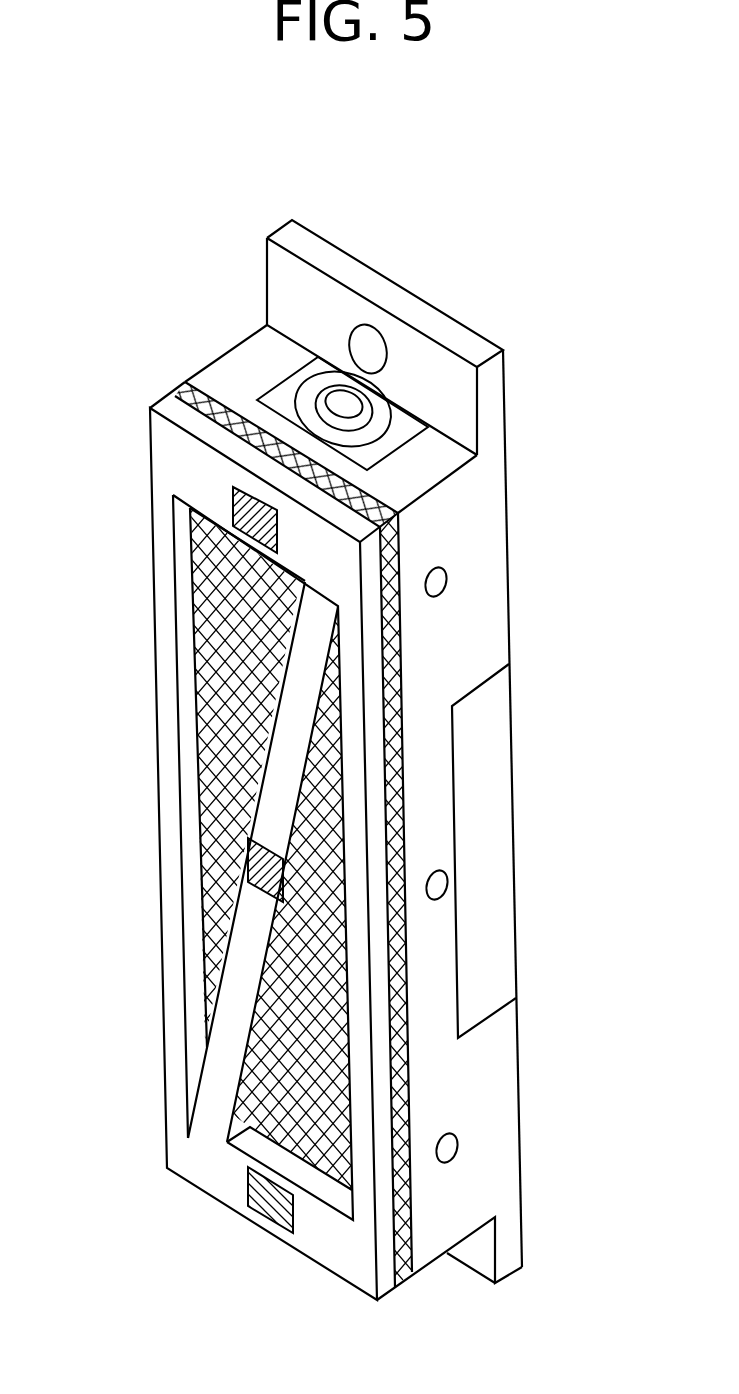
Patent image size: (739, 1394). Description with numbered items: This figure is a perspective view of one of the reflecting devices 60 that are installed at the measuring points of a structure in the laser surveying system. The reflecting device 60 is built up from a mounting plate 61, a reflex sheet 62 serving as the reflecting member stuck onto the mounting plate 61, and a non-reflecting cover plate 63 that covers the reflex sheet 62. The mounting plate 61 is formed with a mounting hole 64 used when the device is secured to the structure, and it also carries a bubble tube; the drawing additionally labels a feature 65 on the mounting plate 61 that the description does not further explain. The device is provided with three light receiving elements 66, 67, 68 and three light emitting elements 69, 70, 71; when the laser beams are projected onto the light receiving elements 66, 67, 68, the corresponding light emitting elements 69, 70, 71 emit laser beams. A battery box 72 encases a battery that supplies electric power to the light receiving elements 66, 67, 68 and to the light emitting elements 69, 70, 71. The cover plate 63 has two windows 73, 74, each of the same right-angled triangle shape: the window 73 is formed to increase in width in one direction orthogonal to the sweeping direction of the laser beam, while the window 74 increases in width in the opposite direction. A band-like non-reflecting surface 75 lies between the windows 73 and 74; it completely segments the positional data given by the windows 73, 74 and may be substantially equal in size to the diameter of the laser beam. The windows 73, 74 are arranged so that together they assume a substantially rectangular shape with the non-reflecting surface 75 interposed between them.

The reflecting device 60 is at (429, 249).
The mounting plate 61 is at (492, 397).
The reflex sheet 62 is at (186, 394).
The cover plate 63 is at (183, 1170).
The mounting hole 64 is at (374, 356).
The counterbored hole 65 is at (306, 393).
The light receiving element 66 is at (250, 856).
The light receiving element 67 is at (233, 496).
The light receiving element 68 is at (275, 1176).
The light emitting element 69 is at (440, 886).
The light emitting element 70 is at (442, 578).
The light emitting element 71 is at (455, 1147).
The battery box 72 is at (498, 937).
The window 73 is at (193, 637).
The window 74 is at (338, 1072).
The non-reflecting surface 75 is at (213, 1098).